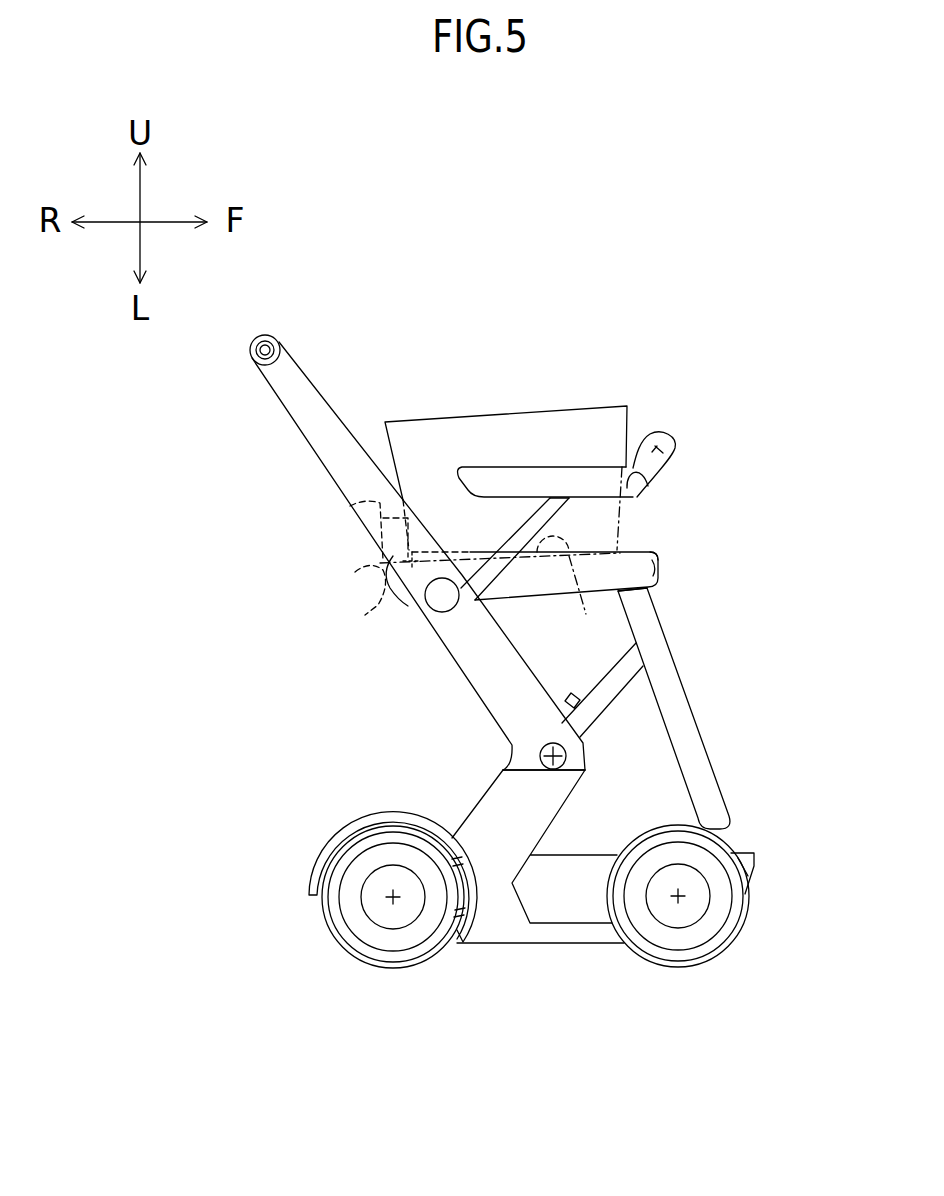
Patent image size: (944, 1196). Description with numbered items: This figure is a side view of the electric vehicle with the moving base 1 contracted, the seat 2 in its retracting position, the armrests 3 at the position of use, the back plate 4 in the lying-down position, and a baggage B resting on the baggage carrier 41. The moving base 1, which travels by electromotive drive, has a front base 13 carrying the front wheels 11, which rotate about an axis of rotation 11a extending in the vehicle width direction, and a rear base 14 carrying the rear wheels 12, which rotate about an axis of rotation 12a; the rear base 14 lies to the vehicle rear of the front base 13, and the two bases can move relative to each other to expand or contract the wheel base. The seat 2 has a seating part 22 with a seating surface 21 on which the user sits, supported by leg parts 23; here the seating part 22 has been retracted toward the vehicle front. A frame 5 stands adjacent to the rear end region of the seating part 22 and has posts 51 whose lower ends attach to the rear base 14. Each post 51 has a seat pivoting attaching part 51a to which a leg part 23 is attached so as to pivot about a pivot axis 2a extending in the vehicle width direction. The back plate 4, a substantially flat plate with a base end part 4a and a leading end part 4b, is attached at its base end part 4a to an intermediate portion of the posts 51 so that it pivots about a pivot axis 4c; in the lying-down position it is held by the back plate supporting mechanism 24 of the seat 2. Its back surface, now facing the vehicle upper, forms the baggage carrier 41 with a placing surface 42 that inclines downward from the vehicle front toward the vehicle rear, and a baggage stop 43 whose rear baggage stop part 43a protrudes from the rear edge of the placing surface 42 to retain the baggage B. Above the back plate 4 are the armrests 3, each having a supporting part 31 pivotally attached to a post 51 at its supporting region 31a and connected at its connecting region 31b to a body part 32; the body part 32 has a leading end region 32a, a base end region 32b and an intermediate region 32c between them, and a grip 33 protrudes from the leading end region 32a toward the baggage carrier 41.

The moving base 1 is at (330, 810).
The front wheels 11 is at (698, 934).
The axis of rotation 11a is at (680, 900).
The rear wheels 12 is at (360, 934).
The axis of rotation 12a is at (391, 900).
The front base 13 is at (758, 856).
The rear base 14 is at (323, 862).
The seat 2 is at (714, 696).
The pivot axis 2a is at (545, 748).
The seating surface 21 is at (717, 708).
The seating part 22 is at (672, 690).
The leg parts 23 is at (597, 700).
The back plate supporting mechanism 24 is at (648, 588).
The armrests 3 is at (670, 467).
The supporting part 31 is at (493, 588).
The supporting region 31a is at (427, 607).
The connecting region 31b is at (520, 527).
The body part 32 is at (523, 482).
The leading end region 32a is at (642, 438).
The base end region 32b is at (480, 483).
The intermediate region 32c is at (553, 483).
The grip 33 is at (668, 430).
The back plate 4 is at (517, 532).
The base end part 4a is at (660, 552).
The leading end part 4b is at (385, 560).
The pivot axis 4c is at (437, 602).
The baggage carrier 41 is at (622, 552).
The placing surface 42 is at (576, 592).
The baggage stop 43 is at (350, 506).
The rear baggage stop part 43a is at (355, 572).
The frame 5 is at (395, 671).
The posts 51 is at (345, 455).
The seat pivoting attaching part 51a is at (586, 775).
The baggage B is at (424, 409).